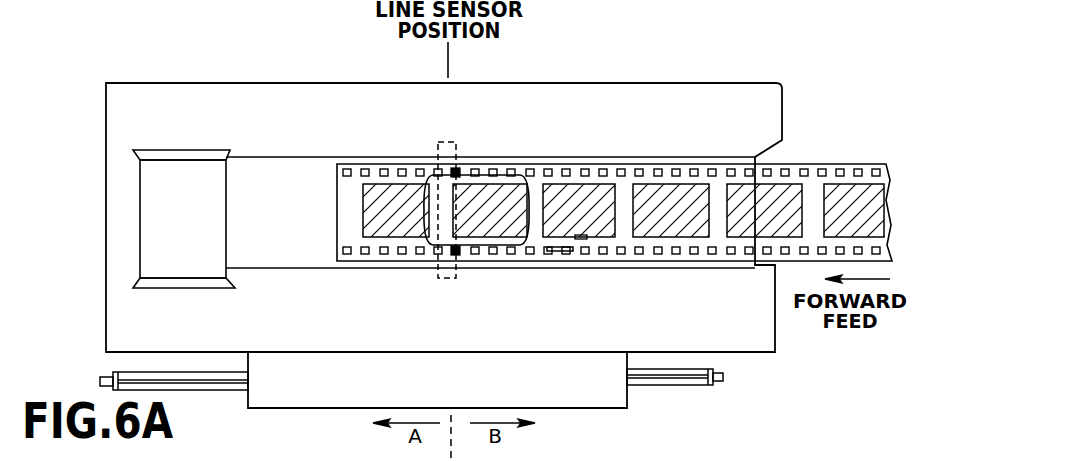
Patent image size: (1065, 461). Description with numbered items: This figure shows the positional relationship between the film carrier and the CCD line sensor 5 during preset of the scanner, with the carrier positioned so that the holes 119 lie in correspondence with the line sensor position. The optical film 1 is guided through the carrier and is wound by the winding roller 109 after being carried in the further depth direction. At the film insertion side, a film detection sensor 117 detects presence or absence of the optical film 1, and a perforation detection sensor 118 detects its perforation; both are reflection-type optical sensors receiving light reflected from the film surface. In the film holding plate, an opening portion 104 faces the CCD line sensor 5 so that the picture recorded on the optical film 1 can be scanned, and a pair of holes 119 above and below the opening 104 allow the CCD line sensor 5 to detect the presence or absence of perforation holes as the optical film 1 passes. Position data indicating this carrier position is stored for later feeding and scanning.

The optical film 1 is at (831, 163).
The CCD line sensor 5 is at (437, 140).
The opening portion 104 is at (490, 250).
The winding roller 109 is at (201, 157).
The film detection sensor 117 is at (587, 238).
The perforation detection sensor 118 is at (562, 253).
The holes 119 is at (457, 168).